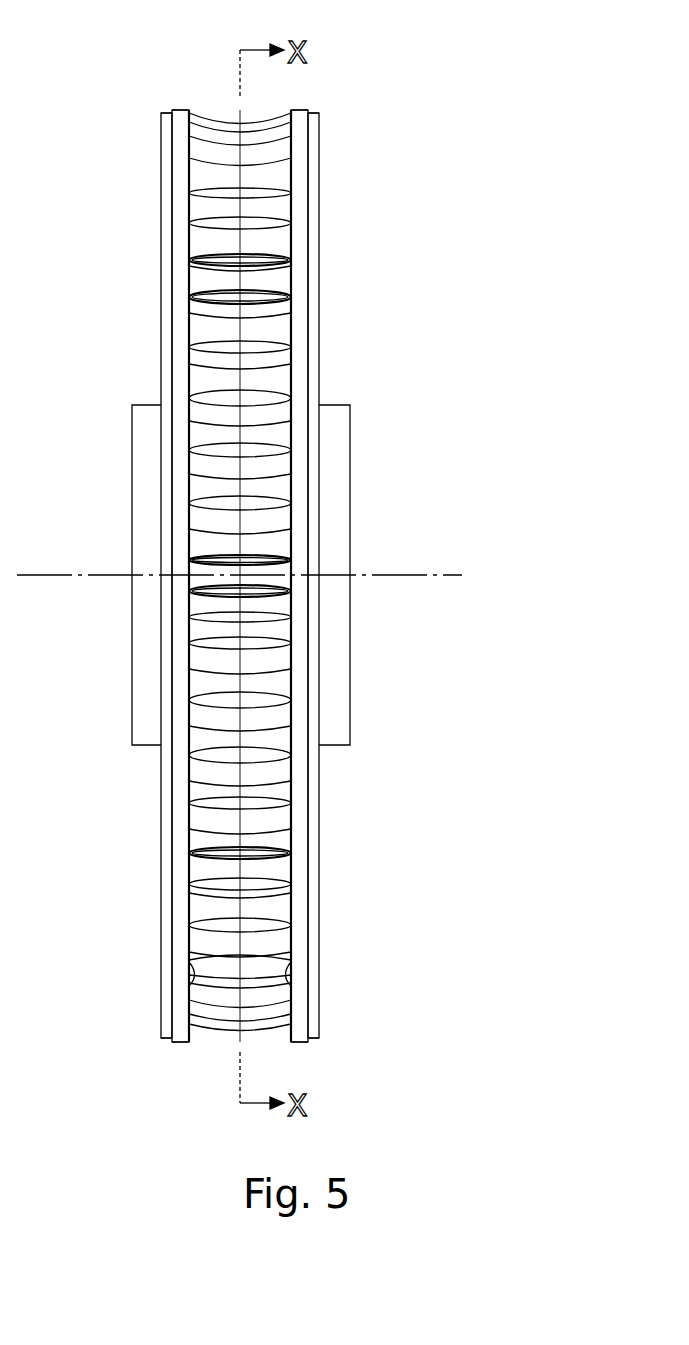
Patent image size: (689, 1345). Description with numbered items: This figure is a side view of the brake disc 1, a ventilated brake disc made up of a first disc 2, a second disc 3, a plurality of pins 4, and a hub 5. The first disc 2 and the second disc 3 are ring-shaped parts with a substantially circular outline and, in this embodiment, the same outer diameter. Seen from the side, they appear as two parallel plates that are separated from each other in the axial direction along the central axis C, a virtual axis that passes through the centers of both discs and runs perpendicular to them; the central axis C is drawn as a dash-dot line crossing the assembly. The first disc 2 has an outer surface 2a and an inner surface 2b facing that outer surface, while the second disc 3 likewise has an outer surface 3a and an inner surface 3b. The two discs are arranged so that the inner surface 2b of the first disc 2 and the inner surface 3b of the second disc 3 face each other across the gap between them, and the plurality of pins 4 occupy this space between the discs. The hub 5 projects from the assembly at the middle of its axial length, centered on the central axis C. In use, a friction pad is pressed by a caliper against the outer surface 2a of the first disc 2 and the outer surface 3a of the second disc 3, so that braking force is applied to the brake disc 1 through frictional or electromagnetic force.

The brake disc 1 is at (352, 109).
The first disc 2 is at (300, 197).
The outer surface of first disc 2a is at (300, 272).
The inner surface of first disc 2b is at (290, 977).
The second disc 3 is at (162, 197).
The outer surface of second disc 3a is at (162, 272).
The inner surface of second disc 3b is at (196, 975).
The pins 4 is at (285, 905).
The hub 5 is at (362, 399).
The central axis C is at (432, 575).